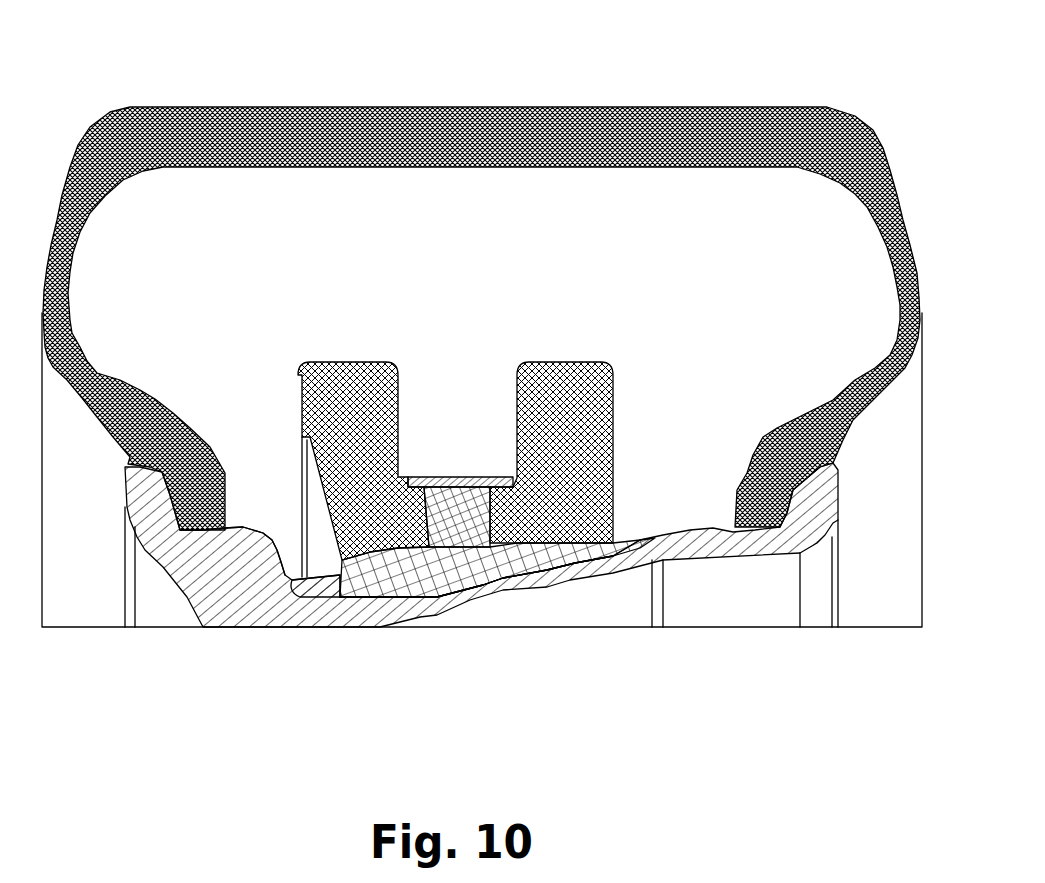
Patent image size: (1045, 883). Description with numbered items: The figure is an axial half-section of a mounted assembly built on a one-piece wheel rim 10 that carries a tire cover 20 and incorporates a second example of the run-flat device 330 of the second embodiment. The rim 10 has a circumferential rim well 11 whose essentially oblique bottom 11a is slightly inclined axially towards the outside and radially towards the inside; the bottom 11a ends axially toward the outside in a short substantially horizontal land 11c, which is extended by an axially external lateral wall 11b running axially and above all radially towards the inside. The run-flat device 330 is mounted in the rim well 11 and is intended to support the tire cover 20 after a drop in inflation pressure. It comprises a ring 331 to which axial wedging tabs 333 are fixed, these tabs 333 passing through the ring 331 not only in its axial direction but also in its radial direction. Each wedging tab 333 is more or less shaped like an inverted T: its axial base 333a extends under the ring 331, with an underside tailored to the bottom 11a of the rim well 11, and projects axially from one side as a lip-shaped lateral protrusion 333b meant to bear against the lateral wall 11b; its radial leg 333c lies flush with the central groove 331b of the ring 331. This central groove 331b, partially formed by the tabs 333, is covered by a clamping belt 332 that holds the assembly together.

The tire cover 20 is at (683, 98).
The run-flat device 330 is at (506, 484).
The ring 331 is at (339, 349).
The central groove 331b is at (510, 476).
The clamping belt 332 is at (466, 468).
The axial wedging tab 333 is at (475, 591).
The axial base 333a is at (473, 567).
The lip-shaped lateral protrusion 333b is at (317, 587).
The radial leg 333c is at (447, 512).
The wheel rim 10 is at (481, 595).
The rim well 11 is at (411, 627).
The bottom 11a is at (543, 570).
The axially external lateral wall 11b is at (292, 582).
The horizontal land 11c is at (367, 598).